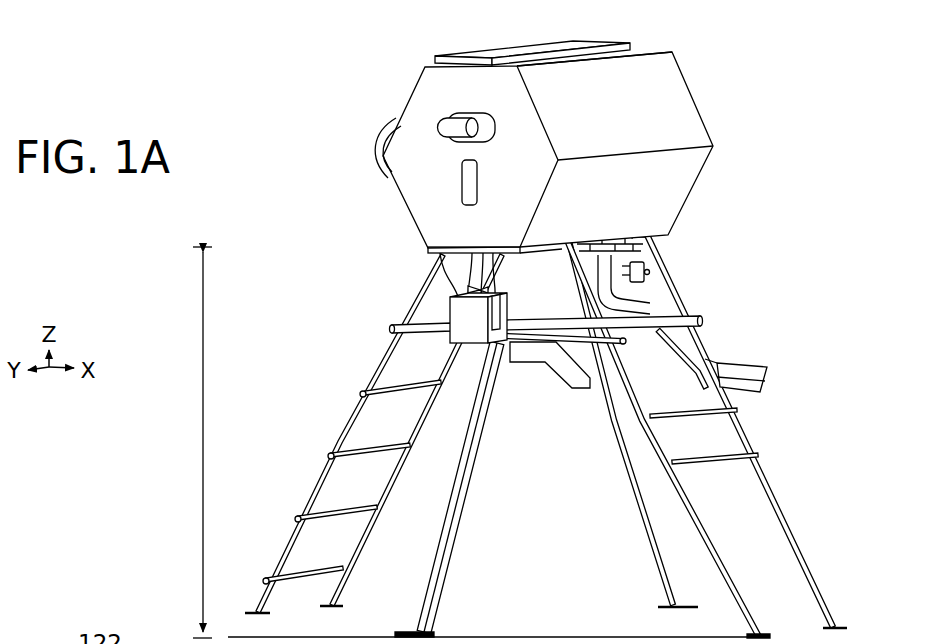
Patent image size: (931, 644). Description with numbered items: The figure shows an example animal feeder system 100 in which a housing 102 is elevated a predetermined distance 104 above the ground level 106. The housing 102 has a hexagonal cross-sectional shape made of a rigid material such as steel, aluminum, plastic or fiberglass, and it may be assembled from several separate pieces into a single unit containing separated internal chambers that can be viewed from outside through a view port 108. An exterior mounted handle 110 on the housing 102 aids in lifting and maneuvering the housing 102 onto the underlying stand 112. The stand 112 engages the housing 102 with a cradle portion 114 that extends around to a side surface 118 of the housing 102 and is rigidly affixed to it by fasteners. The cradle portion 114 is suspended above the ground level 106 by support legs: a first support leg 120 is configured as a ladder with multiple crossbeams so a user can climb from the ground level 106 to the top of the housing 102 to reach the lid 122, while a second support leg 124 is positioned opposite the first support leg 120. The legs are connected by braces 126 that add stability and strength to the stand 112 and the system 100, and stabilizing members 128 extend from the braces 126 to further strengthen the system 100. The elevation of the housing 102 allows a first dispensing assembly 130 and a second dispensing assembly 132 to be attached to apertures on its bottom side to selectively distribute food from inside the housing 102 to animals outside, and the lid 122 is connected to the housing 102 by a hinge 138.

The animal feeder system 100 is at (273, 47).
The housing 102 is at (567, 152).
The predetermined distance 104 is at (176, 442).
The ground level 106 is at (512, 633).
The view port 108 is at (455, 192).
The exterior mounted handle 110 is at (432, 114).
The stand 112 is at (321, 326).
The cradle portion 114 is at (669, 243).
The side surface 118 is at (703, 178).
The first support leg 120 is at (325, 461).
The lid 122 is at (502, 48).
The second support leg 124 is at (792, 520).
The brace 126 is at (535, 343).
The stabilizing member 128 is at (480, 451).
The first dispensing assembly 130 is at (480, 356).
The second dispensing assembly 132 is at (744, 356).
The hinge 138 is at (550, 71).